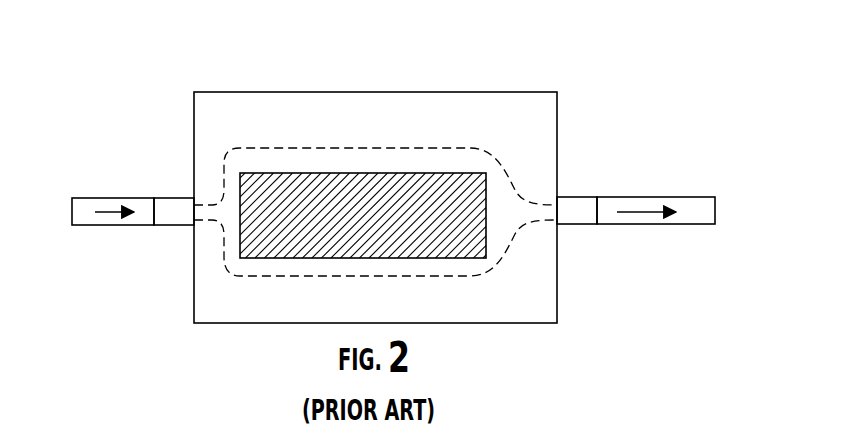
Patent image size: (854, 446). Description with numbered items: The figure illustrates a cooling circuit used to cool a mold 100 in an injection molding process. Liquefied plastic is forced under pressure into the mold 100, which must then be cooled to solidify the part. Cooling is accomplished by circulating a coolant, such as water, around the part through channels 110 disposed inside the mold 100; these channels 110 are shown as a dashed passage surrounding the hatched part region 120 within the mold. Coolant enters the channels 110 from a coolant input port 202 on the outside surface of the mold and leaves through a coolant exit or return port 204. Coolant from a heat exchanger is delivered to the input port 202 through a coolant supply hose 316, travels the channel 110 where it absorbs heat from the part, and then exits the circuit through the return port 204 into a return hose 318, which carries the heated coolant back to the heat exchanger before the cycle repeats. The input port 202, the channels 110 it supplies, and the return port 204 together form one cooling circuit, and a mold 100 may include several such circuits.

The mold 100 is at (176, 91).
The channels 110 is at (470, 147).
The hatched element 120 is at (364, 215).
The coolant input port 202 is at (166, 197).
The coolant exit or return port 204 is at (576, 196).
The coolant supply hoses 316 is at (80, 206).
The return coolant hoses 318 is at (643, 225).